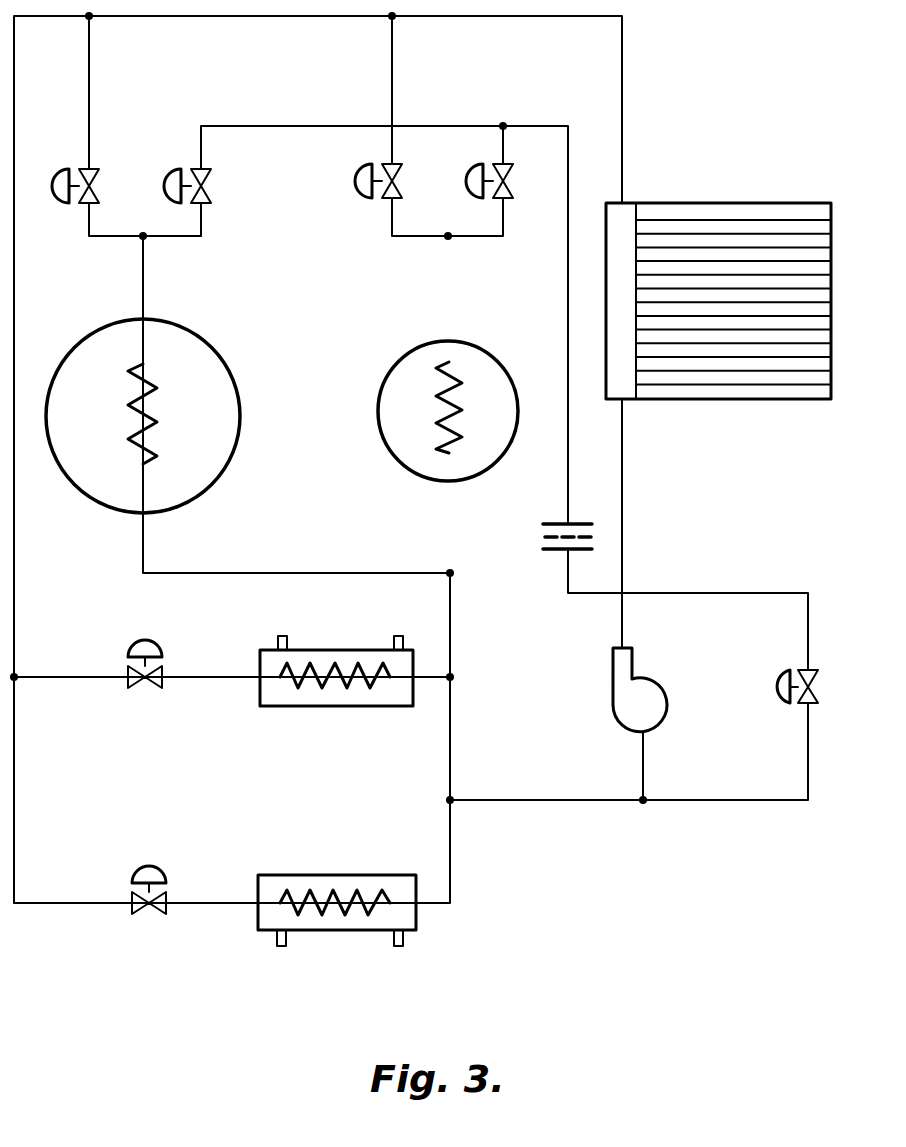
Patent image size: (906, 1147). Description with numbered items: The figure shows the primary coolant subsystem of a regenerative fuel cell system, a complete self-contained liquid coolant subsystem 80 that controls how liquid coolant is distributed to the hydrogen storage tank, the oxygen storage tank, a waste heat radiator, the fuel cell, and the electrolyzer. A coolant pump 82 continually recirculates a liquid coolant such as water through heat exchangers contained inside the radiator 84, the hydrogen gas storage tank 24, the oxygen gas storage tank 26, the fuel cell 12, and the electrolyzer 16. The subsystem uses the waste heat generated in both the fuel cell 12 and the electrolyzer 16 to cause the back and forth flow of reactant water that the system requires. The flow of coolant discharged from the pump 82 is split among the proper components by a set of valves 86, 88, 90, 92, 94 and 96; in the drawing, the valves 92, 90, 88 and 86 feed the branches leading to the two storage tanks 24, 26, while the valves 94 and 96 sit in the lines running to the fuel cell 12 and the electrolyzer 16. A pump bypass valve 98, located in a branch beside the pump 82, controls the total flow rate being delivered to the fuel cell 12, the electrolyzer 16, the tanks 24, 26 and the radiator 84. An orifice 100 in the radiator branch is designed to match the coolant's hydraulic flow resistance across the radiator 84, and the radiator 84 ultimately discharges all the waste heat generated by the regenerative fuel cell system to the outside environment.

The fuel cell 12 is at (352, 649).
The electrolyzer 16 is at (355, 875).
The hydrogen gas storage tank 24 is at (206, 344).
The oxygen gas storage tank 26 is at (483, 352).
The liquid coolant subsystem 80 is at (490, 832).
The coolant pump 82 is at (613, 712).
The radiator 84 is at (742, 203).
The valve 86 is at (468, 178).
The valve 88 is at (350, 176).
The valve 90 is at (168, 170).
The valve 92 is at (70, 168).
The valve 94 is at (140, 641).
The valve 96 is at (145, 867).
The pump bypass valve 98 is at (773, 684).
The orifice 100 is at (552, 520).